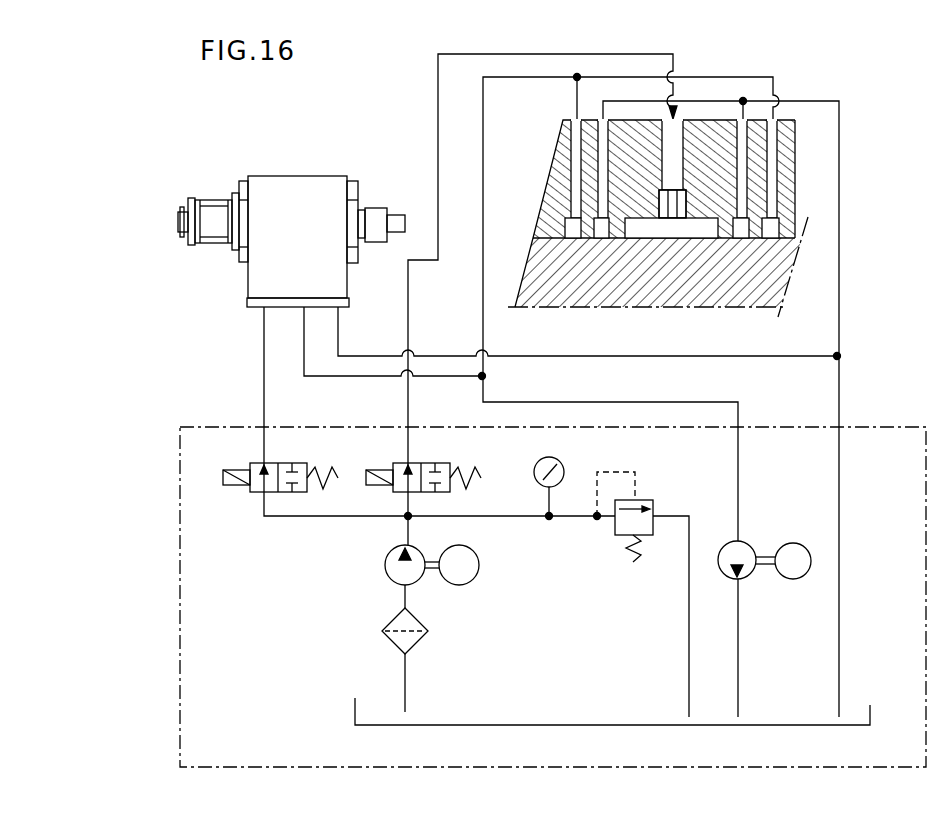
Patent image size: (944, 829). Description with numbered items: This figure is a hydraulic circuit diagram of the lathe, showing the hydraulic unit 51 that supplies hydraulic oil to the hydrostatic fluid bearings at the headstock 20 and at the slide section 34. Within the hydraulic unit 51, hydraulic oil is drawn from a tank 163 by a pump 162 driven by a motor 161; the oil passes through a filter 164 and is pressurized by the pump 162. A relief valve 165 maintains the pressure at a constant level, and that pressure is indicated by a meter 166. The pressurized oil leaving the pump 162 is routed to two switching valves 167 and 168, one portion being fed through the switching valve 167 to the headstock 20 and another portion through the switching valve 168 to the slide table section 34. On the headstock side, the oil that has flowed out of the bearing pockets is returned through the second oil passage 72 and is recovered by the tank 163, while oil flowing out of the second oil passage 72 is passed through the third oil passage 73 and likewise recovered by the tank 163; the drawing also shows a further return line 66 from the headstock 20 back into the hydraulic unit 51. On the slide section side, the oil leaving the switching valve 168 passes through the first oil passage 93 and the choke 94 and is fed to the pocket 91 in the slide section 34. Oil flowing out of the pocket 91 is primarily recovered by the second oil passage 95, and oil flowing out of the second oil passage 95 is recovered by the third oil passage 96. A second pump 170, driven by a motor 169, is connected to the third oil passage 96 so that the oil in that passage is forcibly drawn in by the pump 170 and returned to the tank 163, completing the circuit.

The headstock 20 is at (348, 177).
The slide section 34 is at (552, 176).
The hydraulic unit 51 is at (180, 729).
The hydraulic line 66 is at (263, 361).
The second oil passage 72 is at (342, 324).
The third oil passage 73 is at (304, 342).
The pocket 91 is at (702, 230).
The first oil passage 93 is at (620, 56).
The choke 94 is at (680, 203).
The second oil passage 95 is at (628, 100).
The third oil passage 96 is at (574, 96).
The motor 161 is at (473, 580).
The pump 162 is at (387, 557).
The tank 163 is at (462, 726).
The filter 164 is at (418, 642).
The relief valve 165 is at (615, 528).
The meter 166 is at (535, 461).
The switching valve 167 is at (250, 463).
The switching valve 168 is at (393, 463).
The motor 169 is at (793, 580).
The pump 170 is at (751, 545).